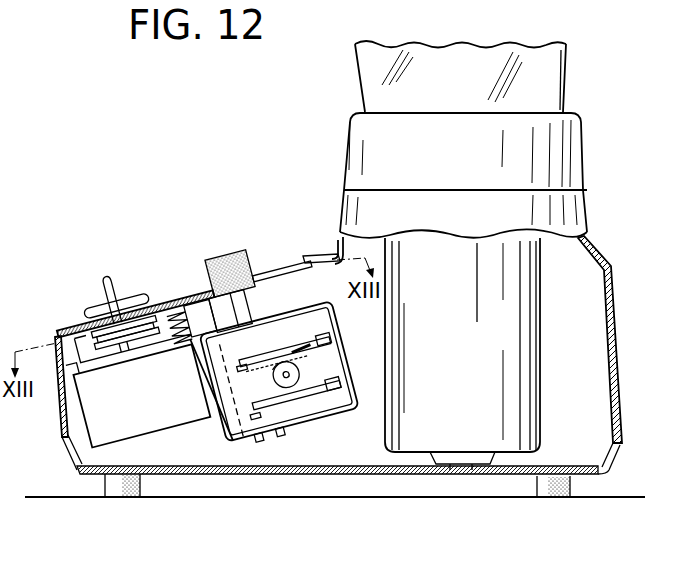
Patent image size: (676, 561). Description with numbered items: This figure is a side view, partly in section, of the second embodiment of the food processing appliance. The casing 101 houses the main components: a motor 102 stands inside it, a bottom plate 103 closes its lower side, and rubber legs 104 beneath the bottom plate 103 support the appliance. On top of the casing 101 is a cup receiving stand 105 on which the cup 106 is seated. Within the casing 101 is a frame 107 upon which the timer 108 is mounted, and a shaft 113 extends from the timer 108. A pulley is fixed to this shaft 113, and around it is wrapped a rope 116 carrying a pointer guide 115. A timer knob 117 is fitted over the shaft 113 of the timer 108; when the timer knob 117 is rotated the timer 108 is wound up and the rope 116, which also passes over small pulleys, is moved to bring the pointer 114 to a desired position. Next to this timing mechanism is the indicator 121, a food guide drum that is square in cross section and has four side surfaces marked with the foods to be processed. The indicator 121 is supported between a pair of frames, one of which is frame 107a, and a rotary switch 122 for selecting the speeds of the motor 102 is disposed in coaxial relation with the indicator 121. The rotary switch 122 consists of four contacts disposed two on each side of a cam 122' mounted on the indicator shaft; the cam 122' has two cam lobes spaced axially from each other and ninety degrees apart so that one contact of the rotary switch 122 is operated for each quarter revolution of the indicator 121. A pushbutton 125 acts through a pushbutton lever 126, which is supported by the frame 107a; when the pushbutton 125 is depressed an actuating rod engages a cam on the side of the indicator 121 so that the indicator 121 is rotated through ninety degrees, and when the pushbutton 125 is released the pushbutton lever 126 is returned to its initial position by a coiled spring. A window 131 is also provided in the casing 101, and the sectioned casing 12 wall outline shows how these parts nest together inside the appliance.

The casing 12 is at (67, 339).
The casing 101 is at (608, 280).
The motor 102 is at (528, 412).
The bottom plate 103 is at (391, 477).
The rubber legs 104 is at (122, 488).
The cup receiving stand 105 is at (568, 147).
The cup 106 is at (556, 82).
The frame 107 is at (60, 374).
The frame 107a is at (218, 413).
The timer 108 is at (100, 427).
The shaft 113 is at (80, 330).
The pointer 114 is at (287, 277).
The pointer guide 115 is at (195, 318).
The rope 116 is at (152, 272).
The timer knob 117 is at (107, 288).
The indicator 121 is at (355, 410).
The rotary switch 122 is at (294, 423).
The cam 122' is at (283, 351).
The pushbutton 125 is at (210, 257).
The pushbutton lever 126 is at (273, 293).
The window 131 is at (307, 260).